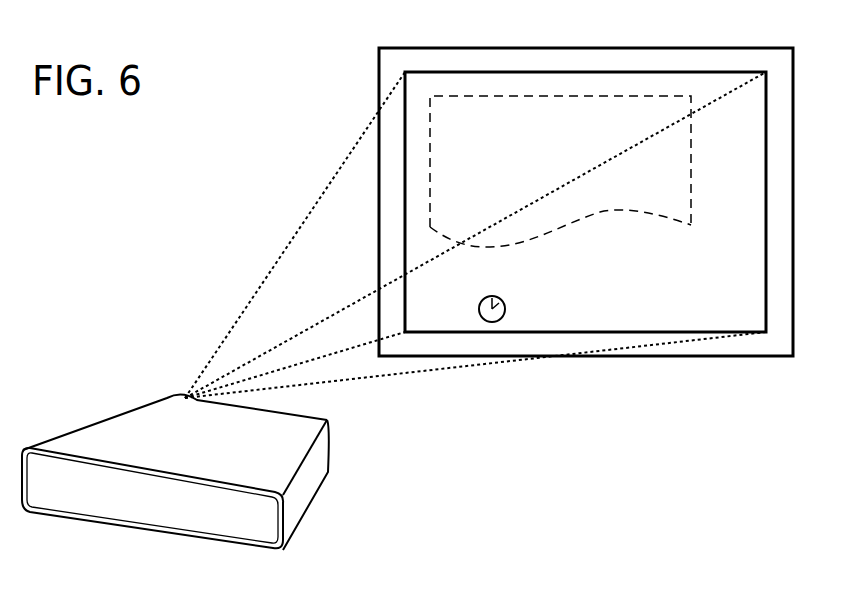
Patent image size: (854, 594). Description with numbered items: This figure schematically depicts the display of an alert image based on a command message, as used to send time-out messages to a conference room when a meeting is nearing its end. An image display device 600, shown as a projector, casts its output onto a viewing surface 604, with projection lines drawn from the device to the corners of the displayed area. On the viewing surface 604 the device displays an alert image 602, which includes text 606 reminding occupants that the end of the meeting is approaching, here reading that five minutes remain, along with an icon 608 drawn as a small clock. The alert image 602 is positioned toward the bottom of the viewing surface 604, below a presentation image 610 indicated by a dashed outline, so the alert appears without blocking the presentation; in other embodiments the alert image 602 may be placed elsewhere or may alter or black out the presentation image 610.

The image display device 600 is at (153, 412).
The alert image 602 is at (766, 165).
The viewing surface 604 is at (745, 48).
The text 606 is at (610, 293).
The icon 608 is at (498, 290).
The presentation image 610 is at (456, 96).